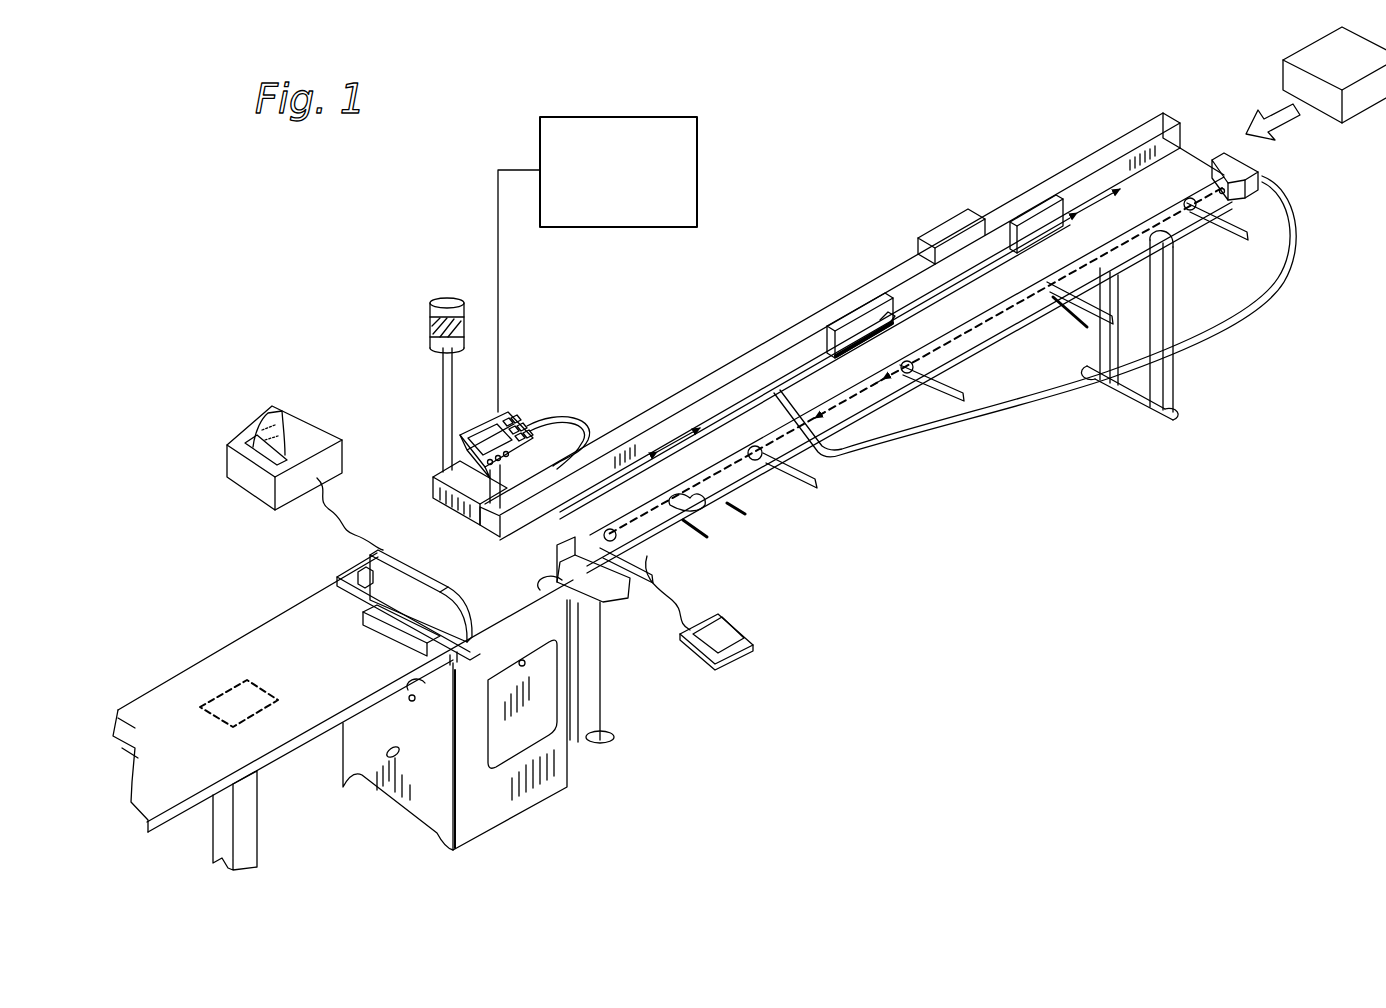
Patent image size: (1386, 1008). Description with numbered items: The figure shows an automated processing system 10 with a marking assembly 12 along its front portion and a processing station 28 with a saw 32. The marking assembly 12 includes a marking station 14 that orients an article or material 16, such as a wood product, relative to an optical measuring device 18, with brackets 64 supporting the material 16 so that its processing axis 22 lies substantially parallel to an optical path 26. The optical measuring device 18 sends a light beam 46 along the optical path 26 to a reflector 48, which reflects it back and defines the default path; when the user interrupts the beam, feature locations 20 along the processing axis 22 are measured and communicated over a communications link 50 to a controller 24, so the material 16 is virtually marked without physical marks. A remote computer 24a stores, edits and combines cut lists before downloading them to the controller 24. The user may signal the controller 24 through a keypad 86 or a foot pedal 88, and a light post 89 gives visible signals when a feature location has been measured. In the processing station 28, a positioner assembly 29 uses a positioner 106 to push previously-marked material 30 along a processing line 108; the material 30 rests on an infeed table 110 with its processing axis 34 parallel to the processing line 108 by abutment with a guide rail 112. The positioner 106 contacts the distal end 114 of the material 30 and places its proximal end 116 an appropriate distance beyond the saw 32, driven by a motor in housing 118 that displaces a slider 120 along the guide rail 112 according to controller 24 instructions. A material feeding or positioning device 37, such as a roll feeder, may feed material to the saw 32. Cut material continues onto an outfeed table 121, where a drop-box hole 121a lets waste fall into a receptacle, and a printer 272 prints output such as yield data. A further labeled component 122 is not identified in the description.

The automated processing system 10 is at (465, 258).
The marking assembly 12 is at (1262, 157).
The marking station 14 is at (965, 367).
The material 16 is at (756, 461).
The optical measuring device 18 is at (1245, 185).
The feature locations 20 is at (1068, 316).
The processing axis 22 is at (881, 393).
The controller 24 is at (479, 407).
The computer 24a is at (697, 111).
The optical path 26 is at (768, 472).
The processing station 28 is at (1197, 130).
The positioner assembly 29 is at (885, 265).
The previously-marked material 30 is at (710, 395).
The saw 32 is at (352, 565).
The processing axis 34 is at (652, 440).
The material feeding or positioning device 37 is at (1310, 56).
The light beam 46 is at (1140, 232).
The reflector 48 is at (560, 580).
The communications link 50 is at (1240, 295).
The brackets 64 is at (817, 483).
The keypad 86 is at (530, 425).
The foot pedal 88 is at (722, 628).
The light post 89 is at (435, 345).
The positioner 106 is at (860, 330).
The processing line 108 is at (1045, 210).
The infeed table 110 is at (1195, 165).
The guide rail 112 is at (1040, 205).
The distal end 114 is at (835, 355).
The proximal end 116 is at (362, 615).
The housing 118 is at (430, 490).
The slider 120 is at (965, 237).
The outfeed table 121 is at (268, 647).
The drop-box hole 121a is at (227, 700).
The stop block 122 is at (418, 593).
The printer 272 is at (240, 440).